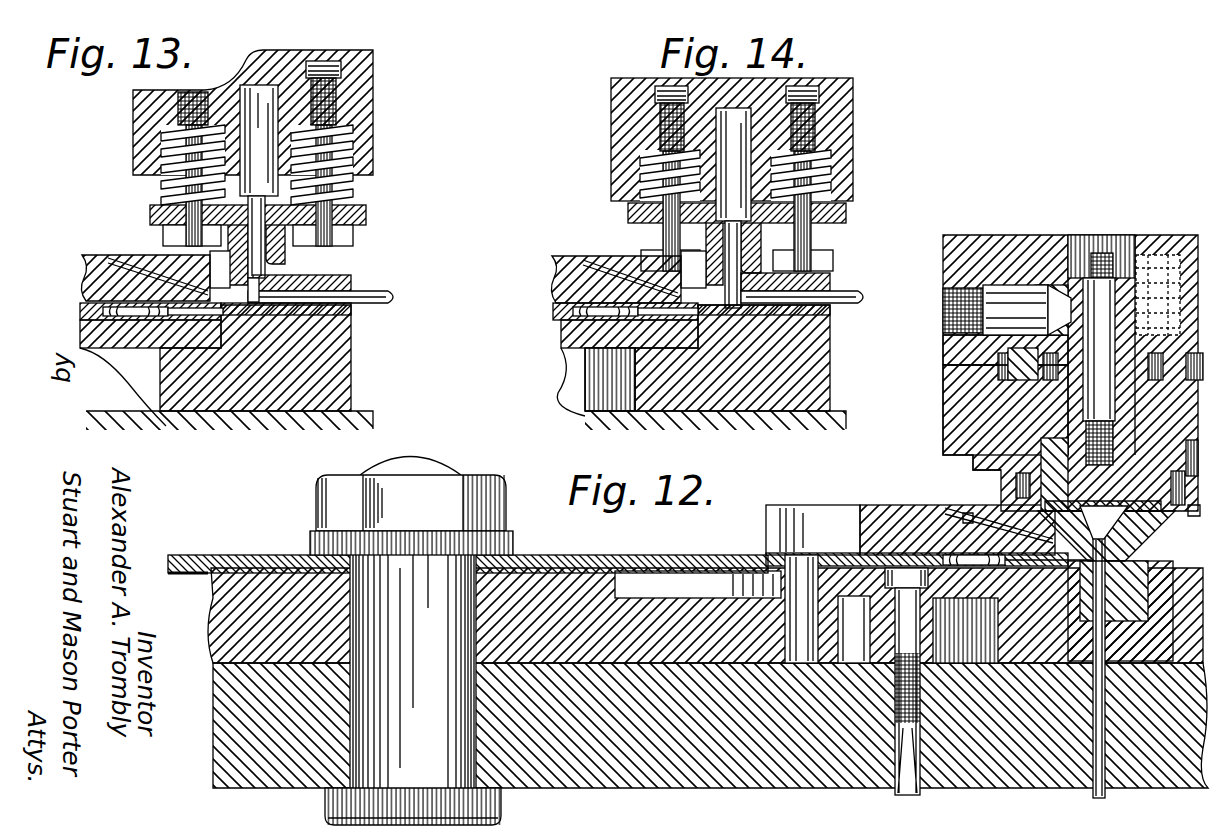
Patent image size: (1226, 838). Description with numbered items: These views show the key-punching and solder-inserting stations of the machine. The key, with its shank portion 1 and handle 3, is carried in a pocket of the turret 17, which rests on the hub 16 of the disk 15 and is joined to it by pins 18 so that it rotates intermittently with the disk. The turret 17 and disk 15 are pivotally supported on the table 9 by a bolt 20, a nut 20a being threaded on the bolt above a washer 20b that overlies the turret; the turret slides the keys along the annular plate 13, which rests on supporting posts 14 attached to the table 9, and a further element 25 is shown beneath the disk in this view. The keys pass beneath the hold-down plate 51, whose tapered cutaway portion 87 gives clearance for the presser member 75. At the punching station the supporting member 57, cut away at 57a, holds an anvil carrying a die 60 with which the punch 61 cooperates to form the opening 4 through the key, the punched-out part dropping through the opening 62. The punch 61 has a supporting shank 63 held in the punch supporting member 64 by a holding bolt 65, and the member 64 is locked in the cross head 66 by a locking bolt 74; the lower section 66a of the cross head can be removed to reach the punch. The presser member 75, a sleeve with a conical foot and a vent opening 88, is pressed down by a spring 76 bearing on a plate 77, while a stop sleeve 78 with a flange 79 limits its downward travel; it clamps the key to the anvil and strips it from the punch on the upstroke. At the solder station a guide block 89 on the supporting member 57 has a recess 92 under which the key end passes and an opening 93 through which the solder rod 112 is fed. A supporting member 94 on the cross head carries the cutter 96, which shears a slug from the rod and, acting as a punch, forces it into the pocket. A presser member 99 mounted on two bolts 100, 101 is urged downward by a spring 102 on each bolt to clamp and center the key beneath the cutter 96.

In FIG. 13, the shank portion 1 is at (188, 305).
In FIG. 13, the handle 3 is at (128, 310).
In FIG. 14, the handle 3 is at (560, 318).
In FIG. 13, the opening 4 is at (248, 296).
In FIG. 13, the table 9 is at (355, 410).
In FIG. 14, the table 9 is at (578, 412).
In FIG. 12, the table 9 is at (594, 772).
In FIG. 13, the annular plate 13 is at (155, 352).
In FIG. 14, the annular plate 13 is at (580, 360).
In FIG. 12, the annular plate 13 is at (965, 630).
In FIG. 12, the supporting posts 14 is at (912, 772).
In FIG. 12, the disk 15 is at (622, 618).
In FIG. 12, the hub 16 is at (548, 544).
In FIG. 13, the turret 17 is at (78, 302).
In FIG. 14, the turret 17 is at (548, 304).
In FIG. 12, the turret 17 is at (843, 540).
In FIG. 12, the pins 18 is at (790, 580).
In FIG. 12, the bolt 20 is at (413, 678).
In FIG. 12, the nut 20a is at (411, 494).
In FIG. 12, the washer 20b is at (305, 533).
In FIG. 12, the pin 25 is at (846, 622).
In FIG. 13, the hold-down plate 51 is at (78, 270).
In FIG. 14, the hold-down plate 51 is at (550, 272).
In FIG. 12, the hold-down plate 51 is at (870, 498).
In FIG. 13, the supporting member 57 is at (343, 323).
In FIG. 14, the supporting member 57 is at (800, 365).
In FIG. 12, the supporting member 57 is at (1157, 608).
In FIG. 12, the cut away portion 57a is at (1037, 635).
In FIG. 12, the die 60 is at (1117, 580).
In FIG. 12, the punch 61 is at (1165, 522).
In FIG. 12, the opening 62 is at (1092, 772).
In FIG. 12, the supporting shank 63 is at (1182, 452).
In FIG. 12, the punch supporting member 64 is at (975, 335).
In FIG. 12, the holding bolt 65 is at (1073, 260).
In FIG. 12, the cross head 66 is at (1178, 237).
In FIG. 12, the lower section 66a is at (948, 393).
In FIG. 12, the locking bolt 74 is at (987, 293).
In FIG. 12, the presser member 75 is at (1015, 390).
In FIG. 12, the spring 76 is at (1151, 223).
In FIG. 12, the plate 77 is at (1013, 333).
In FIG. 12, the stop sleeve 78 is at (980, 450).
In FIG. 12, the flange 79 is at (1190, 500).
In FIG. 13, the tapered cutaway portion 87 is at (150, 265).
In FIG. 14, the tapered cutaway portion 87 is at (600, 256).
In FIG. 12, the tapered cutaway portion 87 is at (937, 502).
In FIG. 12, the opening 88 is at (960, 512).
In FIG. 13, the guide block 89 is at (335, 266).
In FIG. 14, the guide block 89 is at (824, 262).
In FIG. 13, the recess 92 is at (270, 305).
In FIG. 14, the recess 92 is at (742, 292).
In FIG. 13, the opening 93 is at (345, 272).
In FIG. 14, the opening 93 is at (824, 292).
In FIG. 13, the supporting member 94 is at (366, 48).
In FIG. 14, the supporting member 94 is at (846, 80).
In FIG. 13, the cutter 96 is at (268, 249).
In FIG. 14, the cutter 96 is at (735, 250).
In FIG. 13, the presser member 99 is at (214, 247).
In FIG. 14, the presser member 99 is at (693, 243).
In FIG. 13, the bolt 100 is at (180, 98).
In FIG. 14, the bolt 100 is at (660, 108).
In FIG. 13, the bolt 101 is at (335, 92).
In FIG. 14, the bolt 101 is at (812, 118).
In FIG. 13, the spring 102 is at (155, 180).
In FIG. 14, the spring 102 is at (640, 168).
In FIG. 13, the solder rod 112 is at (384, 285).
In FIG. 14, the solder rod 112 is at (848, 284).